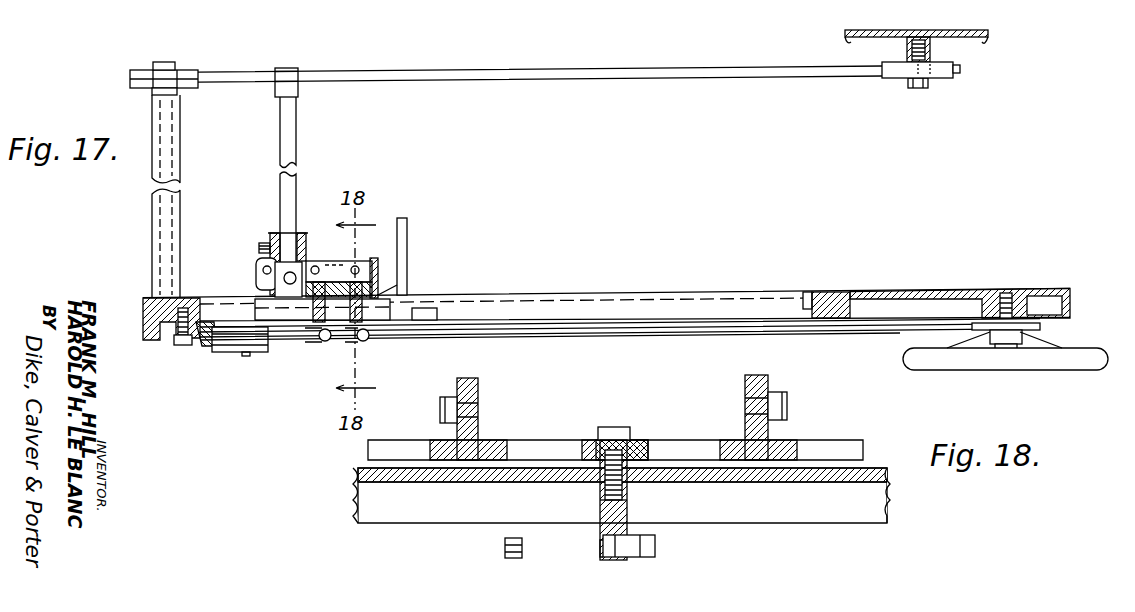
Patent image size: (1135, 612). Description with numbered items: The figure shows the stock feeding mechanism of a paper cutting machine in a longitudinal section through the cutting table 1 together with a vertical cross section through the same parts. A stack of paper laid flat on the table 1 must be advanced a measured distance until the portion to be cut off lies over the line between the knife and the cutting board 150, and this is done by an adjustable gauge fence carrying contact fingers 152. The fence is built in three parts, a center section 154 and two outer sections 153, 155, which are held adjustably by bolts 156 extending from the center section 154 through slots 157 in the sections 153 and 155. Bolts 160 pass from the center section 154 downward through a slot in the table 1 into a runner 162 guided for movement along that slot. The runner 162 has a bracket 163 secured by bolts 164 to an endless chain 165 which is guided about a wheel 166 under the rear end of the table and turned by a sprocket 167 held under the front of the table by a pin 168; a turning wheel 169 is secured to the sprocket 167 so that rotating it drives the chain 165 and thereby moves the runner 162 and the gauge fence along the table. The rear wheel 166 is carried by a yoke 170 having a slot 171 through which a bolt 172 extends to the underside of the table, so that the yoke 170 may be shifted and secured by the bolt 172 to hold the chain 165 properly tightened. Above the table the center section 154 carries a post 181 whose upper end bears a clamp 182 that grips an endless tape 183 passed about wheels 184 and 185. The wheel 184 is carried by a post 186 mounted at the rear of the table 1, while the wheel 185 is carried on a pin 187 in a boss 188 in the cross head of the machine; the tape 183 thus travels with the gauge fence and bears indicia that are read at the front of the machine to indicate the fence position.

In FIG. 17, the cutting table 1 is at (145, 300).
In FIG. 18, the cutting table 1 is at (885, 466).
In FIG. 17, the cutting board 150 is at (810, 292).
In FIG. 17, the contact fingers 152 is at (408, 226).
In FIG. 18, the gauge fence section 153 is at (790, 442).
In FIG. 18, the center section 154 is at (632, 442).
In FIG. 18, the gauge fence section 155 is at (440, 445).
In FIG. 17, the bolts 156 is at (358, 266).
In FIG. 18, the bolts 156 is at (440, 410).
In FIG. 17, the slots 157 is at (320, 247).
In FIG. 18, the slots 157 is at (480, 392).
In FIG. 17, the bolts 160 is at (378, 268).
In FIG. 18, the bolts 160 is at (615, 427).
In FIG. 17, the runner 162 is at (320, 335).
In FIG. 18, the runner 162 is at (600, 505).
In FIG. 17, the bracket 163 is at (363, 342).
In FIG. 18, the bracket 163 is at (620, 558).
In FIG. 17, the bolts 164 is at (315, 340).
In FIG. 18, the bolts 164 is at (655, 548).
In FIG. 17, the endless chain 165 is at (530, 332).
In FIG. 18, the endless chain 165 is at (505, 548).
In FIG. 17, the wheel 166 is at (245, 352).
In FIG. 17, the sprocket 167 is at (1042, 326).
In FIG. 17, the pin 168 is at (1010, 292).
In FIG. 17, the turning wheel 169 is at (1075, 360).
In FIG. 17, the yoke 170 is at (203, 345).
In FIG. 17, the slot 171 is at (165, 340).
In FIG. 17, the bolt 172 is at (181, 346).
In FIG. 17, the post 181 is at (280, 188).
In FIG. 17, the clamp 182 is at (298, 70).
In FIG. 17, the endless tape 183 is at (470, 70).
In FIG. 17, the wheel 184 is at (135, 70).
In FIG. 17, the wheel 185 is at (940, 80).
In FIG. 17, the post 186 is at (182, 154).
In FIG. 17, the pin 187 is at (907, 48).
In FIG. 17, the boss 188 is at (945, 52).